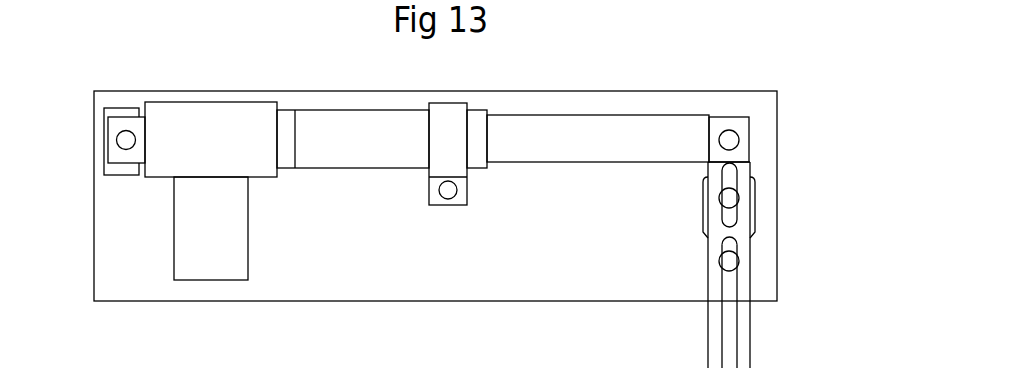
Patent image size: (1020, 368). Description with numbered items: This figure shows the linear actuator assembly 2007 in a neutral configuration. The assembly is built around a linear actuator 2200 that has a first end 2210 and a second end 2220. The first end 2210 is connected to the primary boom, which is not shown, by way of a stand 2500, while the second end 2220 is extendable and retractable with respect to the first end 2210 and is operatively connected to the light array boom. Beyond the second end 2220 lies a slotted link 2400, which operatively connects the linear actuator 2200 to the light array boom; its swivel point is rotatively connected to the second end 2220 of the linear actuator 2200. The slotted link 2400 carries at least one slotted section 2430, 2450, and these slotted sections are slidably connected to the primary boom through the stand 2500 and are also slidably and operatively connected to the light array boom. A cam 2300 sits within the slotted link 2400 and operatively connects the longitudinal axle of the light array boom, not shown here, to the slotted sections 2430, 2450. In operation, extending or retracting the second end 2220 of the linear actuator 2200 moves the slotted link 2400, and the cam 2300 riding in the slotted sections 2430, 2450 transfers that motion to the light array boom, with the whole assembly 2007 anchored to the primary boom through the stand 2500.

The linear actuator assembly 2007 is at (520, 286).
The first end 2210 is at (118, 150).
The second end 2220 is at (741, 132).
The linear actuator 2200 is at (493, 139).
The stand 2500 is at (316, 191).
The slotted link 2400 is at (744, 173).
The slotted section 2430 is at (736, 185).
The cam 2300 is at (737, 203).
The slotted section 2450 is at (738, 332).